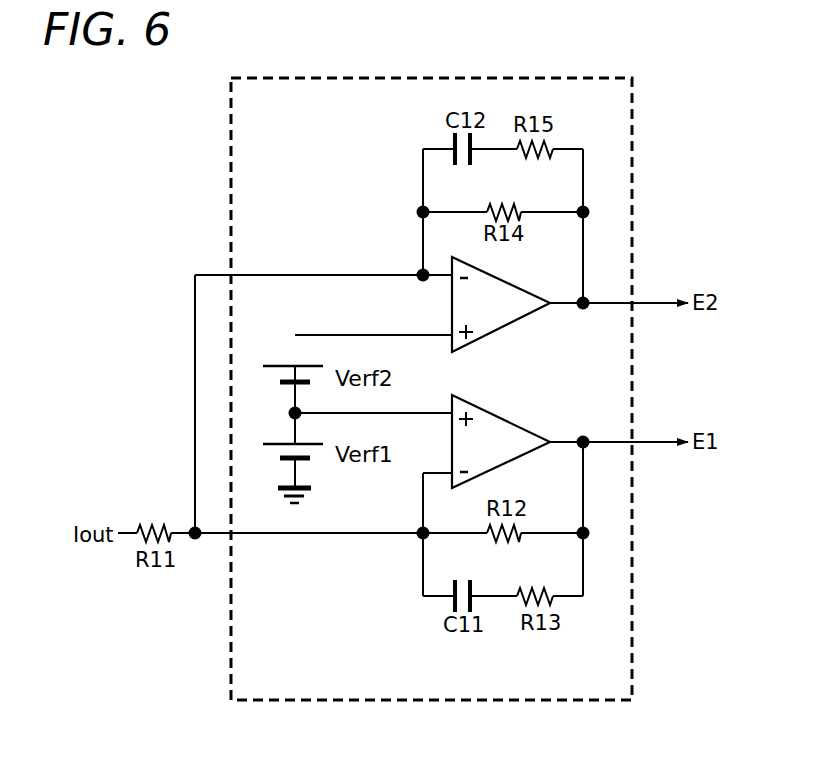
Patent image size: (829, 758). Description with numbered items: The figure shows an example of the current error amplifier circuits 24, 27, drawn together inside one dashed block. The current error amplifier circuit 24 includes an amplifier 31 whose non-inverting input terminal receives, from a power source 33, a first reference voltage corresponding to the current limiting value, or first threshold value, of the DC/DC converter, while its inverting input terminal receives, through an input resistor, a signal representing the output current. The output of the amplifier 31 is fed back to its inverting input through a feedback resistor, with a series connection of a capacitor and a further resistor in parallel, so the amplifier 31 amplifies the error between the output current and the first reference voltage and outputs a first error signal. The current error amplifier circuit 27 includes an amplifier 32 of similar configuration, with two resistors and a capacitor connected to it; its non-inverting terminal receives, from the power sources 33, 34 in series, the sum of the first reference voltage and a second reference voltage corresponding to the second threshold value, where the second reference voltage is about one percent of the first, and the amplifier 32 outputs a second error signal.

The current error amplifier circuit 24 is at (444, 365).
The current error amplifier circuit 27 is at (565, 78).
The amplifier 31 is at (512, 420).
The amplifier 32 is at (512, 325).
The power source 33 is at (268, 432).
The power source 34 is at (268, 350).